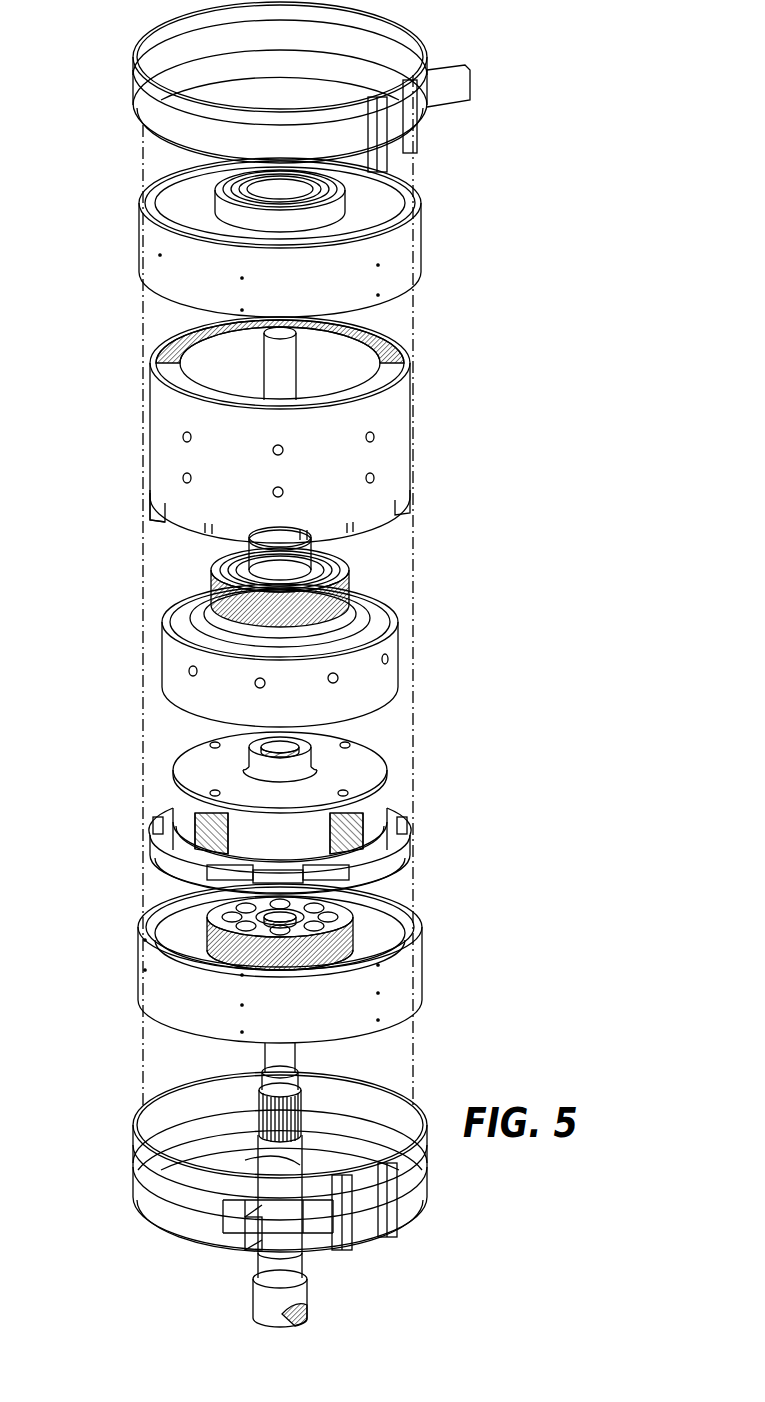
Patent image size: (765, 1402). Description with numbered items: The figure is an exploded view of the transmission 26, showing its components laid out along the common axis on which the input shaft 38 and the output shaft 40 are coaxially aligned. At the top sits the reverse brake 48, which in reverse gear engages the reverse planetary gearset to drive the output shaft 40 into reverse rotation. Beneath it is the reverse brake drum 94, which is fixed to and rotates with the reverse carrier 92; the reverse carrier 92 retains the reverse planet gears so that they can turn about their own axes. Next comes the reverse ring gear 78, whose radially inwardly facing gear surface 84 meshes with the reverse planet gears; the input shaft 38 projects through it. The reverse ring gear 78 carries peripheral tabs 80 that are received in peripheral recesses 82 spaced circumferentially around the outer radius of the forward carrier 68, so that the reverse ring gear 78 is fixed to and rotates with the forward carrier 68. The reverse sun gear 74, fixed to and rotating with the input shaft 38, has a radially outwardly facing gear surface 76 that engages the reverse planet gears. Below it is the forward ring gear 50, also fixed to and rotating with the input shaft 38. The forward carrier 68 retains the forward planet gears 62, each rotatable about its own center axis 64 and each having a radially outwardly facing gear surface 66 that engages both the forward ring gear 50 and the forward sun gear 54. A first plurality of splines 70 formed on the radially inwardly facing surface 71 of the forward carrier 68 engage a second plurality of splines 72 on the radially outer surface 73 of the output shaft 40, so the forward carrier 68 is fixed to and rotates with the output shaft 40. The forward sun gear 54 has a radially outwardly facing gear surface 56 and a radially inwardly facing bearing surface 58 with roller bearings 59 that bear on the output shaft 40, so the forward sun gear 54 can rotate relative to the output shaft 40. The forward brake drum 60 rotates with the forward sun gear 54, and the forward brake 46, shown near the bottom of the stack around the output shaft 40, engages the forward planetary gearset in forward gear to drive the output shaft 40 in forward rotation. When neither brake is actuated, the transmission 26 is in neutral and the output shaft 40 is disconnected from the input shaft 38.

The transmission 26 is at (583, 153).
The reverse brake 48 is at (140, 100).
The reverse brake drum 94 is at (417, 242).
The reverse carrier 92 is at (333, 205).
The radially inwardly facing gear surface 84 is at (180, 343).
The reverse ring gear 78 is at (398, 440).
The peripheral tabs 80 is at (187, 522).
The input shaft 38 is at (283, 380).
The reverse sun gear 74 is at (345, 577).
The radially outwardly facing gear surface 76 is at (353, 610).
The forward ring gear 50 is at (393, 643).
The forward carrier 68 is at (192, 765).
The first plurality of splines 70 is at (265, 738).
The radially inwardly facing surface 71 is at (300, 736).
The center axis 64 is at (210, 745).
The forward planet gears 62 is at (207, 823).
The radially outwardly facing gear surface 66 is at (190, 837).
The peripheral recesses 82 is at (192, 870).
The forward sun gear 54 is at (330, 892).
The radially outwardly facing gear surface 56 is at (340, 913).
The radially inwardly facing bearing surface 58 is at (265, 917).
The roller bearings 59 is at (270, 950).
The forward brake drum 60 is at (410, 973).
The second plurality of splines 72 is at (255, 1105).
The radially outer surface 73 is at (270, 1160).
The forward brake 46 is at (135, 1168).
The output shaft 40 is at (252, 1292).